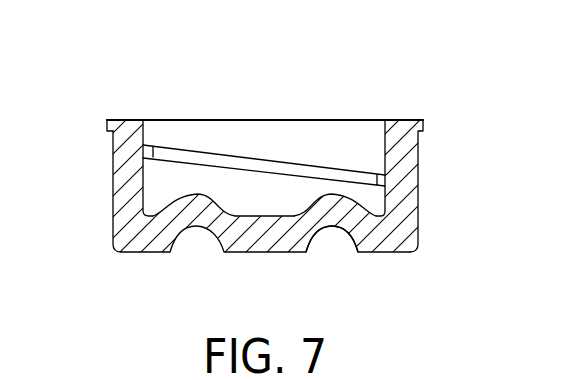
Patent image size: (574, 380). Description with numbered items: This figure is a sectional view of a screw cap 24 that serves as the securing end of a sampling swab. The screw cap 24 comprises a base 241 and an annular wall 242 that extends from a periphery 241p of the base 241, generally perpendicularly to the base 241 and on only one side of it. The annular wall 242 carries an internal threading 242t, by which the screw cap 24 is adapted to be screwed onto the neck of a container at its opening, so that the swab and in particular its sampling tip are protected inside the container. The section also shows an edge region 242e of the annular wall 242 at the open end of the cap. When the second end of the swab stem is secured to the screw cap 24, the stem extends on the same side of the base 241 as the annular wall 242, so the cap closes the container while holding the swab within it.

The screw cap 24 is at (453, 102).
The annular wall 242 is at (418, 183).
The flange edge of frame 242e is at (113, 161).
The internal threading 242t is at (170, 150).
The base 241 is at (282, 253).
The periphery of the base 241p is at (385, 253).